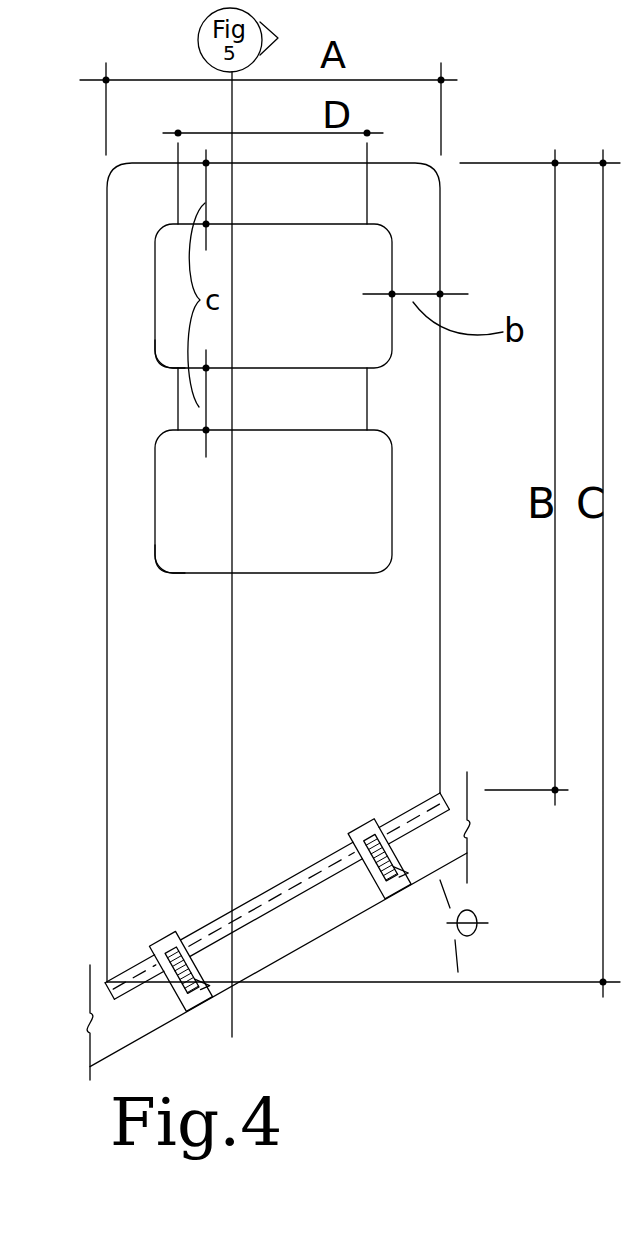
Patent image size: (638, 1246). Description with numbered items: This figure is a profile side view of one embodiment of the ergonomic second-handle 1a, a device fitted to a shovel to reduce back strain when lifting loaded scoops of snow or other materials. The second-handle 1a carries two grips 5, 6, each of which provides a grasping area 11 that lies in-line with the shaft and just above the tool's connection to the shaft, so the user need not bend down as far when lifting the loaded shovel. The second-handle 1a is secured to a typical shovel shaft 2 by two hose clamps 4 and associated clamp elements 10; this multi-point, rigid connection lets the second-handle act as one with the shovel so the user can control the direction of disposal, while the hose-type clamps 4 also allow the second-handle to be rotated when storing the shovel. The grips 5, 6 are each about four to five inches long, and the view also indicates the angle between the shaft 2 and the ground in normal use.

The ergonomic second-handle 1a is at (417, 703).
The shovel shaft 2 is at (290, 927).
The hose clamps 4 is at (177, 995).
The grip 5 is at (335, 213).
The grip 6 is at (335, 415).
The clamp 10 is at (375, 816).
The grasping areas 11 is at (247, 533).